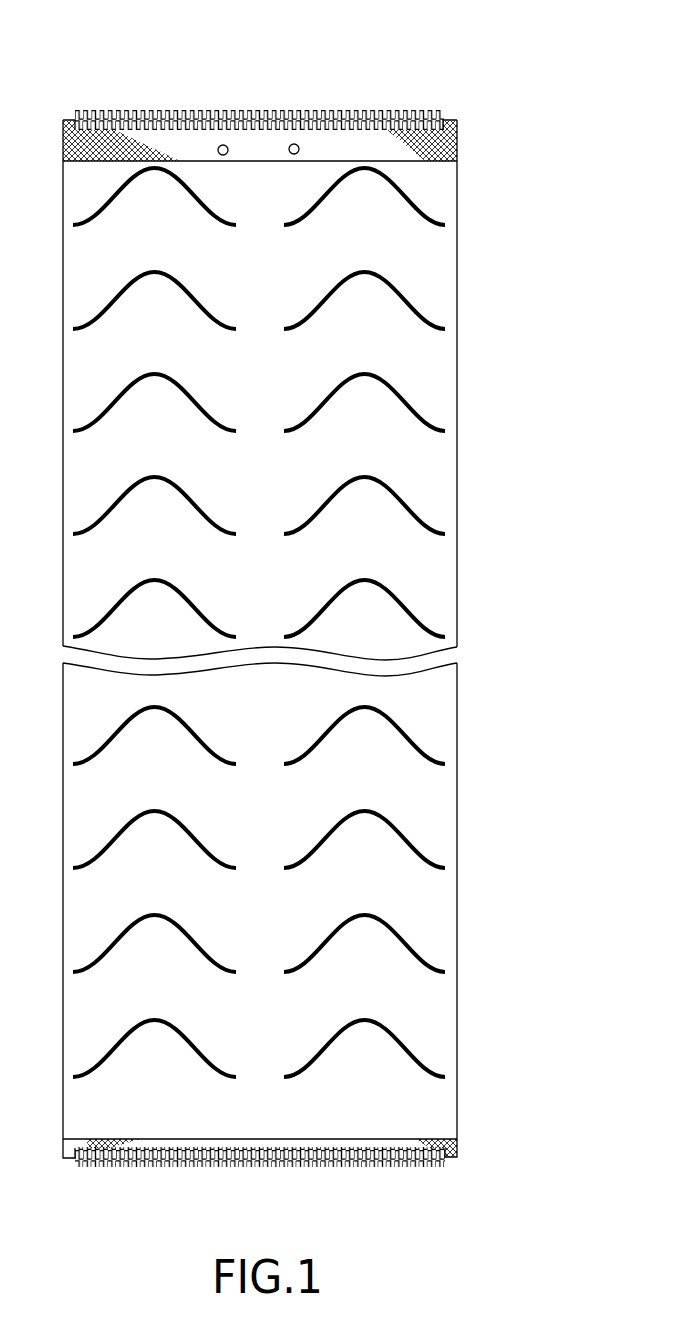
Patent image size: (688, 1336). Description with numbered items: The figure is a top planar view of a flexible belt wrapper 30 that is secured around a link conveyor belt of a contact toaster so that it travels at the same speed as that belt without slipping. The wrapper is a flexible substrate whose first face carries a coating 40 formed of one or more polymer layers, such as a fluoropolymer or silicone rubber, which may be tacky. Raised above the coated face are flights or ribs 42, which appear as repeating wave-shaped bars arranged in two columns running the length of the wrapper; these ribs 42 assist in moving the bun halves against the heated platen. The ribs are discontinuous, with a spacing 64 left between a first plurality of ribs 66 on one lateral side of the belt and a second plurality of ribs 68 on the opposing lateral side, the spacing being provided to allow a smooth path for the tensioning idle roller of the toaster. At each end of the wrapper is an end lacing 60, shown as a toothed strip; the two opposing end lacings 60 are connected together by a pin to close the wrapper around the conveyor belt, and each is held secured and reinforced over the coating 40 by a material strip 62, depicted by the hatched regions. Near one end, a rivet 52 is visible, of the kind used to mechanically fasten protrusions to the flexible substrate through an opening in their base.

The flexible belt wrapper 30 is at (477, 868).
The coating 40 is at (429, 376).
The ribs 42 is at (420, 515).
The rivet 52 is at (294, 144).
The end lacings 60 is at (187, 110).
The material strip 62 is at (443, 140).
The spacing 64 is at (264, 1103).
The first plurality of ribs 66 is at (143, 1057).
The second plurality of ribs 68 is at (374, 1057).